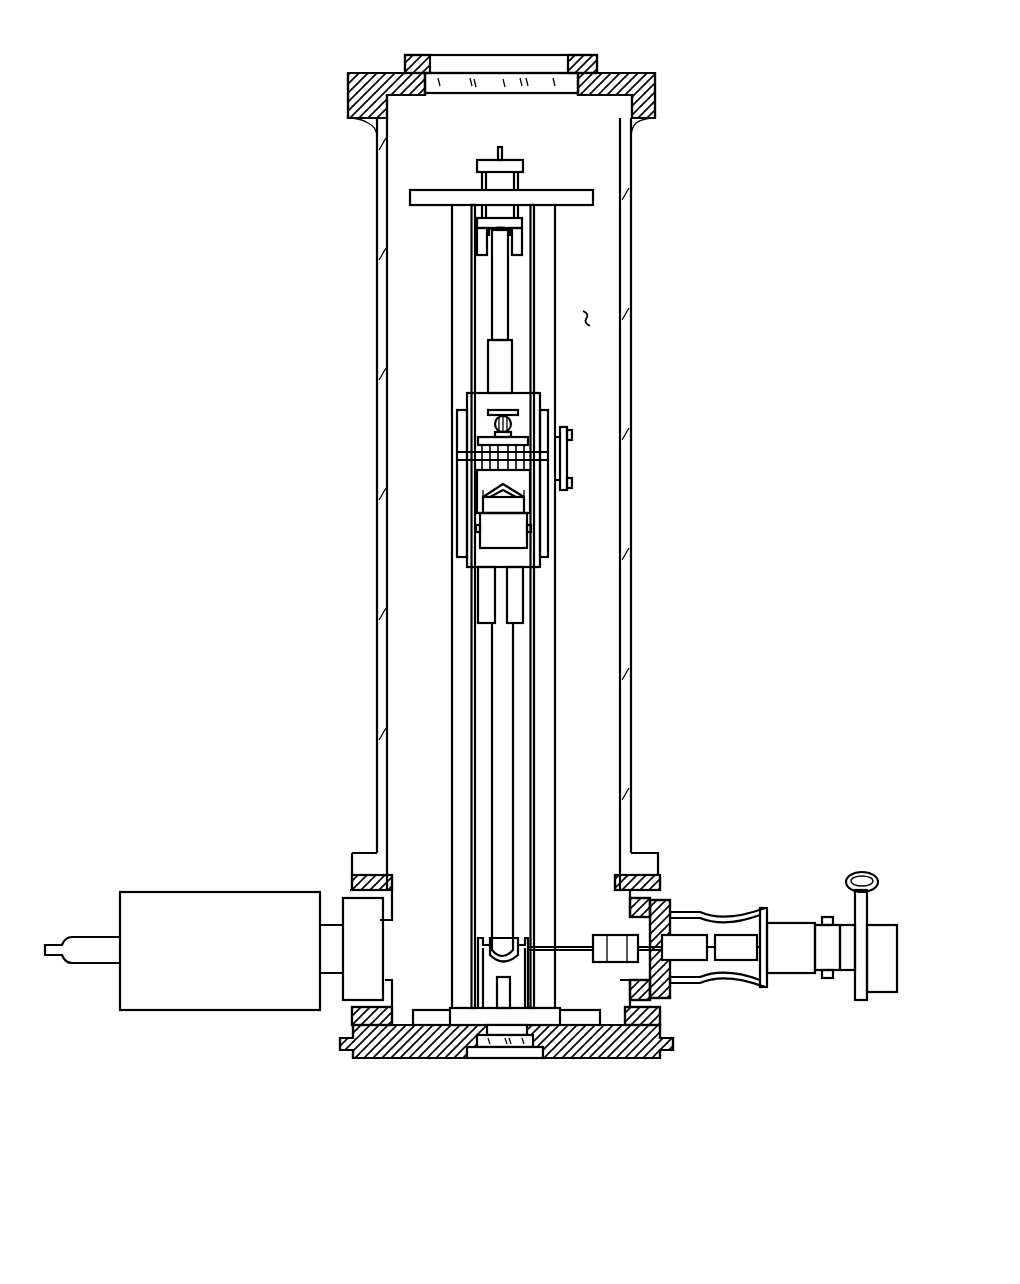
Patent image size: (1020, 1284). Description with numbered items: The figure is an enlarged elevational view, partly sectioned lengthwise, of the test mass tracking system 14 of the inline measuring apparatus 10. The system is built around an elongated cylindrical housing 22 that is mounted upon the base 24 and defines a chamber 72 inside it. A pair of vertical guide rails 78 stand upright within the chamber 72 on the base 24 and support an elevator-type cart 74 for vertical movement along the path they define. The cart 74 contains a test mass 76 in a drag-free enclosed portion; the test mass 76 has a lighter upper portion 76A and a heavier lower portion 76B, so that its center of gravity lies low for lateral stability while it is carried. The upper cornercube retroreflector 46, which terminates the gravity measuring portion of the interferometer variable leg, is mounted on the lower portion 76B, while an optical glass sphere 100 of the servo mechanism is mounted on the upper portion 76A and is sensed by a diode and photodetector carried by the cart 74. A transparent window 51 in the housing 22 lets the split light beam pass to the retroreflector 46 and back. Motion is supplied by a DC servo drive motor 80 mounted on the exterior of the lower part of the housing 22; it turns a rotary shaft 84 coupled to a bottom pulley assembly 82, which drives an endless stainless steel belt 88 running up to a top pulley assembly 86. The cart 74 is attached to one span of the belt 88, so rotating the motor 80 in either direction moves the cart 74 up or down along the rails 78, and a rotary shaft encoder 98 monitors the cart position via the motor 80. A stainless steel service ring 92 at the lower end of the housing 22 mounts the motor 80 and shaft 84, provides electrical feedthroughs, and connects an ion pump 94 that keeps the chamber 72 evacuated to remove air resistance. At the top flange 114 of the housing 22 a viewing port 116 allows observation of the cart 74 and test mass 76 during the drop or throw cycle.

The inline measuring apparatus 10 is at (205, 105).
The test mass tracking system 14 is at (750, 118).
The housing 22 is at (632, 745).
The base 24 is at (612, 1055).
The upper retroreflector 46 is at (522, 502).
The window 51 is at (520, 1055).
The chamber 72 is at (592, 313).
The cart 74 is at (460, 440).
The test mass 76 is at (485, 490).
The upper portion of test mass 76A is at (522, 440).
The lower portion of test mass 76B is at (520, 540).
The vertical guide rails 78 is at (452, 695).
The servo drive motor 80 is at (798, 965).
The bottom pulley assembly 82 is at (480, 948).
The rotary shaft 84 is at (600, 930).
The top pulley assembly 86 is at (480, 228).
The belt 88 is at (515, 810).
The service ring 92 is at (355, 890).
The ion pump 94 is at (200, 890).
The rotary shaft encoder 98 is at (890, 990).
The optical glass sphere 100 is at (512, 410).
The top flange 114 is at (641, 76).
The viewing port 116 is at (520, 72).